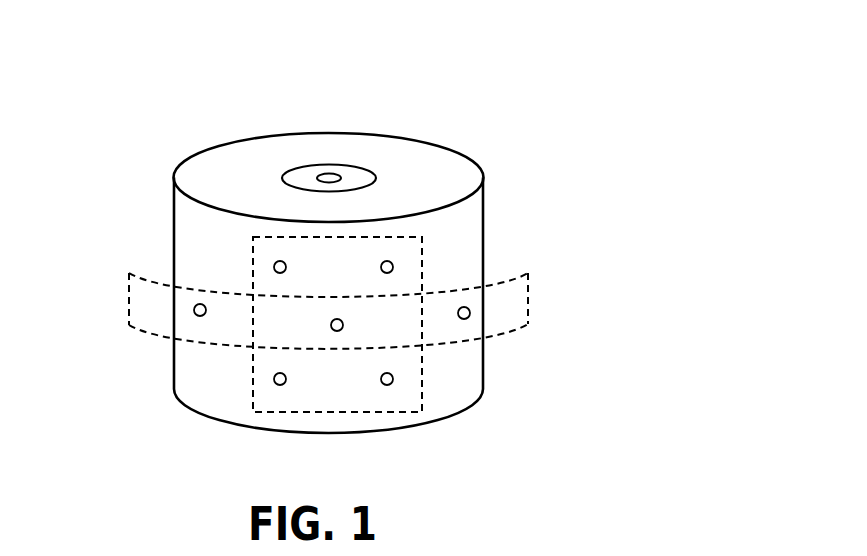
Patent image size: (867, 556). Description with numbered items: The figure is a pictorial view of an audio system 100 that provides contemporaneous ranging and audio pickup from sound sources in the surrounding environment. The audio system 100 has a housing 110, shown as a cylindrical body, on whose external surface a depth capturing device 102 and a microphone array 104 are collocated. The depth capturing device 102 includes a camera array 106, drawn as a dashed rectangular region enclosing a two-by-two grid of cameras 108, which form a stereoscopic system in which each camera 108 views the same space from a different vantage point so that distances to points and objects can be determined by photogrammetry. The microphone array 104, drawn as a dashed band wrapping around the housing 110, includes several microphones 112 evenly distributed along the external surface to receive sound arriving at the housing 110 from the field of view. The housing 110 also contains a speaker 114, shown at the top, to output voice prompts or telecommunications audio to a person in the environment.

The audio system 100 is at (470, 93).
The housing 110 is at (198, 155).
The speaker 114 is at (338, 168).
The microphone array 104 is at (528, 299).
The microphone 112 is at (343, 318).
The camera array 106 is at (253, 370).
The depth capturing device 102 is at (274, 267).
The camera 108 is at (393, 378).